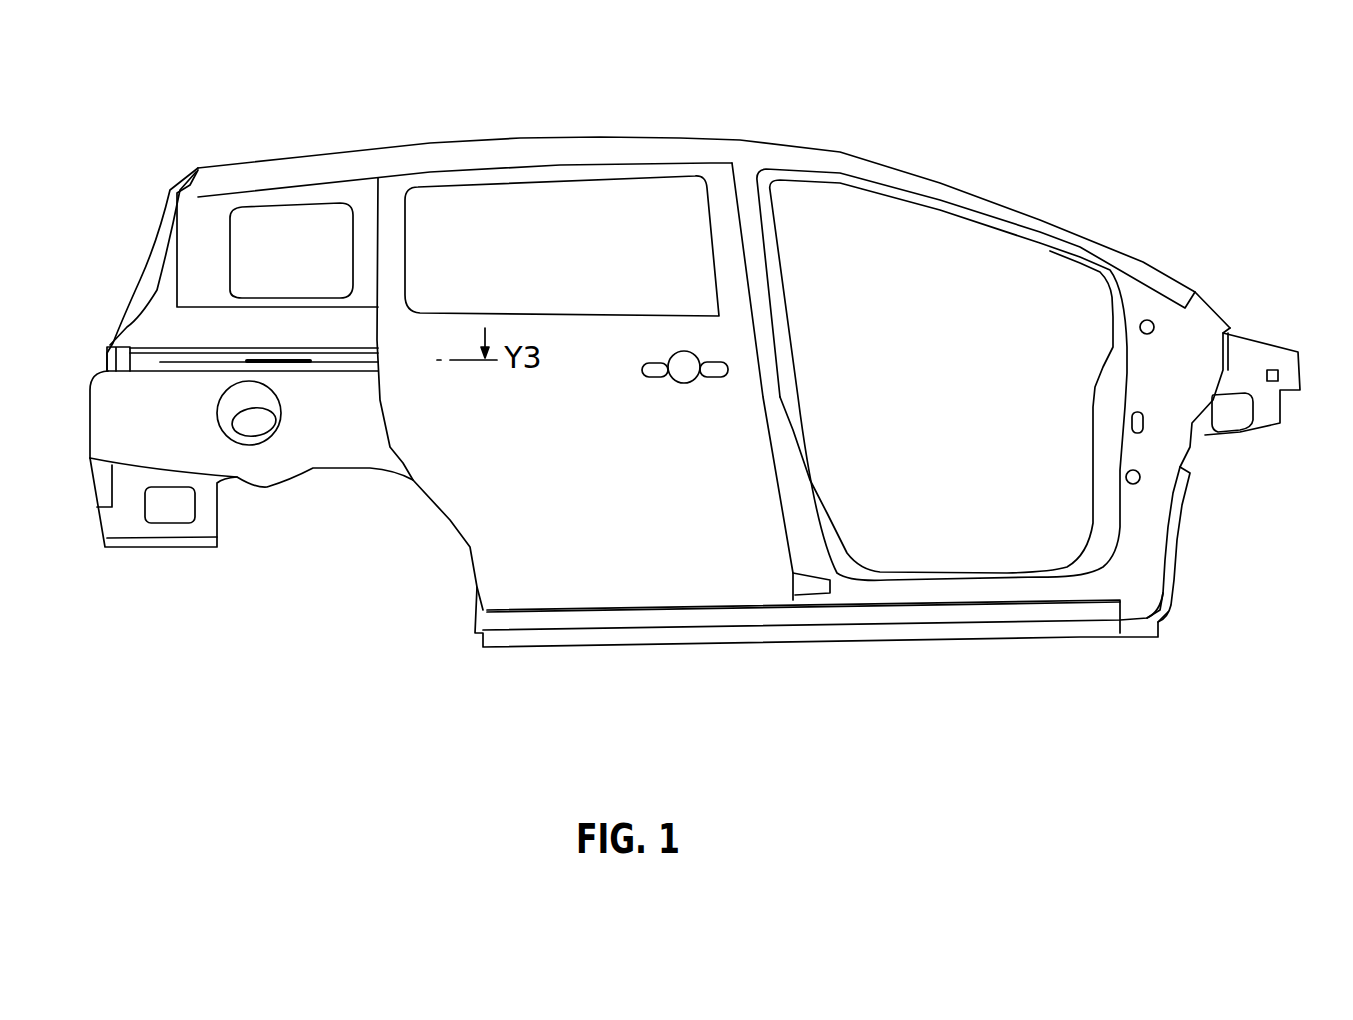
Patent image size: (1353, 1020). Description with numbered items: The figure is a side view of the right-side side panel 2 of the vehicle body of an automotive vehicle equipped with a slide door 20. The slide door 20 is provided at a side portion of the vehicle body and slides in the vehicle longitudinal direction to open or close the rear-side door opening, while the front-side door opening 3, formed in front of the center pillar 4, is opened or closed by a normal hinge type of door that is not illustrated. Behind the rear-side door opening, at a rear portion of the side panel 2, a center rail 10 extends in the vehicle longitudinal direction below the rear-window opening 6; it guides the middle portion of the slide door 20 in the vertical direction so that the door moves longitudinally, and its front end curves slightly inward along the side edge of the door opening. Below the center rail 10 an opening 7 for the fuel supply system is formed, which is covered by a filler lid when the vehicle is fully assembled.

The side panel 2 is at (716, 136).
The front-side door opening 3 is at (963, 225).
The center pillar 4 is at (787, 317).
The rear-window opening 6 is at (304, 211).
The opening for a fuel supply system 7 is at (217, 418).
The center rail 10 is at (292, 372).
The slide door 20 is at (615, 568).